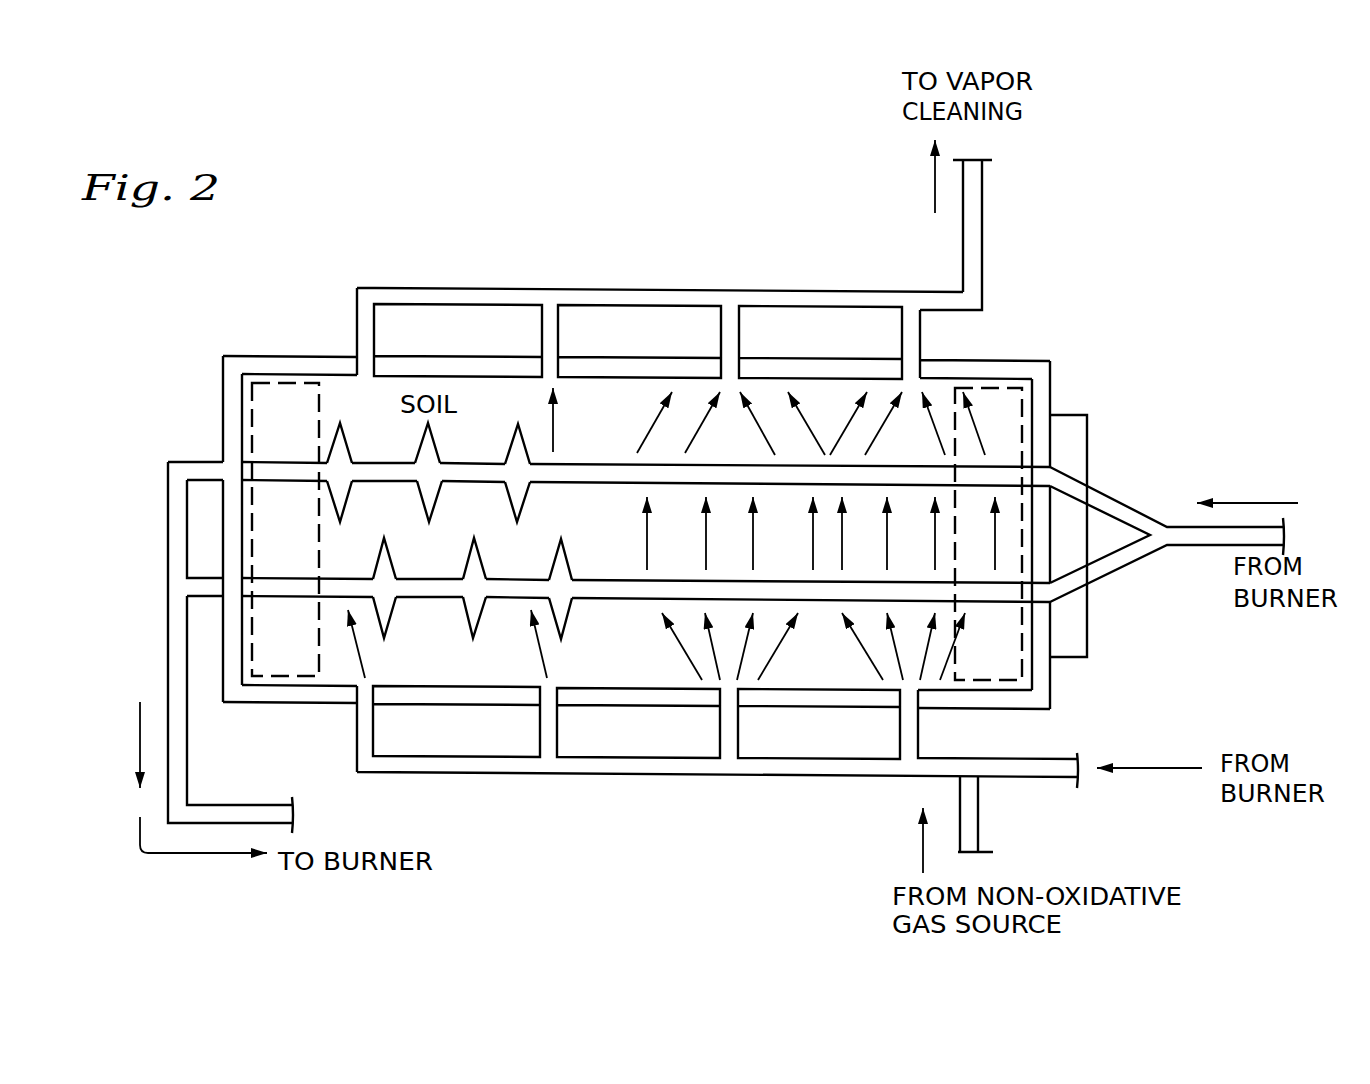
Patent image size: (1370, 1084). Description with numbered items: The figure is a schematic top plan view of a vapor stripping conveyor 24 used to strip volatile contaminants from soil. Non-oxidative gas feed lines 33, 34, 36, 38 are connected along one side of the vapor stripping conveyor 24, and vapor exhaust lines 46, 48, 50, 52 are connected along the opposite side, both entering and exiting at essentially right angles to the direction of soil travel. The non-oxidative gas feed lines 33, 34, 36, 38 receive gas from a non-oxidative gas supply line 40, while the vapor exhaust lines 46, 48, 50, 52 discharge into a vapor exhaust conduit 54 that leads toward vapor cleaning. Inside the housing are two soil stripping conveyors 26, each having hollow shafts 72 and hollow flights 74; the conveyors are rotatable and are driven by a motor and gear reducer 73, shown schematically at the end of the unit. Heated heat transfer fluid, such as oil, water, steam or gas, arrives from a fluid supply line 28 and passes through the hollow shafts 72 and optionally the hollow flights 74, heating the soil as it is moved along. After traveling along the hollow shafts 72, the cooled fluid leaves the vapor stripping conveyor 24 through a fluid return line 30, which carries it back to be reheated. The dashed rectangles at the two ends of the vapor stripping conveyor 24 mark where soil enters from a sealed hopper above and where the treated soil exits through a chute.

The vapor stripping conveyor 24 is at (1013, 330).
The soil stripping conveyors 26 is at (482, 482).
The fluid supply line 28 is at (1127, 545).
The fluid return line 30 is at (168, 660).
The non-oxidative gas feed line 33 is at (373, 720).
The non-oxidative gas feed line 34 is at (557, 730).
The non-oxidative gas feed line 36 is at (738, 727).
The non-oxidative gas feed line 38 is at (918, 735).
The non-oxidative gas supply line 40 is at (815, 775).
The vapor exhaust line 46 is at (357, 330).
The vapor exhaust line 48 is at (542, 332).
The vapor exhaust line 50 is at (721, 335).
The vapor exhaust line 52 is at (902, 335).
The vapor exhaust conduit 54 is at (983, 212).
The hollow shafts 72 is at (370, 482).
The motor and gear reducer 73 is at (1067, 413).
The hollow flights 74 is at (538, 515).